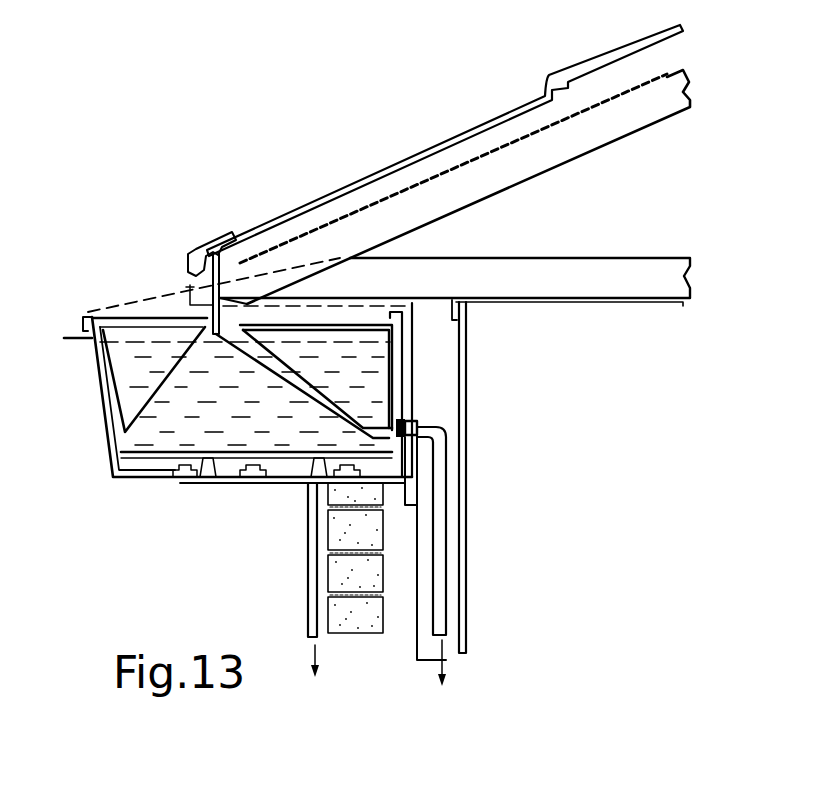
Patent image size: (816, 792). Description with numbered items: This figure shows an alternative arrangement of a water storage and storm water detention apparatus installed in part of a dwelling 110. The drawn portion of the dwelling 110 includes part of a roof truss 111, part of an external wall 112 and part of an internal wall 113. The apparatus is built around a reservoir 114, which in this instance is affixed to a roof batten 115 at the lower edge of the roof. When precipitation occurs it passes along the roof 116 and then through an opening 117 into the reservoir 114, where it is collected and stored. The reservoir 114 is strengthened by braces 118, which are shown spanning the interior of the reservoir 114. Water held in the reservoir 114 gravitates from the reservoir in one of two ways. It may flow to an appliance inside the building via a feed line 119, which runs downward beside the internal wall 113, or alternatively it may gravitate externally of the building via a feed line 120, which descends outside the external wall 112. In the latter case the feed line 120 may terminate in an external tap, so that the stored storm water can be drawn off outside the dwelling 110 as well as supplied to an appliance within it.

The dwelling 110 is at (336, 104).
The roof truss 111 is at (473, 177).
The external wall 112 is at (340, 627).
The internal wall 113 is at (467, 631).
The reservoir 114 is at (120, 377).
The roof batten 115 is at (204, 254).
The roof 116 is at (303, 206).
The opening 117 is at (138, 302).
The braces 118 is at (150, 410).
The feed line 119 is at (443, 538).
The feed line 120 is at (310, 548).